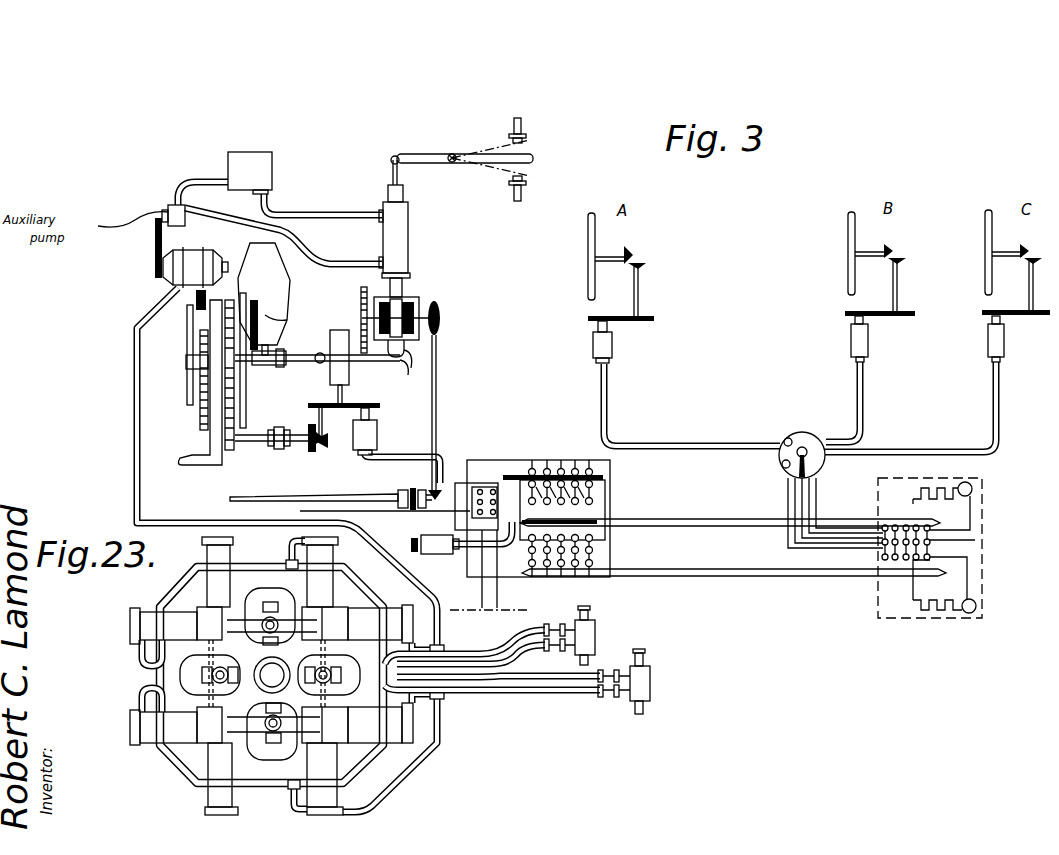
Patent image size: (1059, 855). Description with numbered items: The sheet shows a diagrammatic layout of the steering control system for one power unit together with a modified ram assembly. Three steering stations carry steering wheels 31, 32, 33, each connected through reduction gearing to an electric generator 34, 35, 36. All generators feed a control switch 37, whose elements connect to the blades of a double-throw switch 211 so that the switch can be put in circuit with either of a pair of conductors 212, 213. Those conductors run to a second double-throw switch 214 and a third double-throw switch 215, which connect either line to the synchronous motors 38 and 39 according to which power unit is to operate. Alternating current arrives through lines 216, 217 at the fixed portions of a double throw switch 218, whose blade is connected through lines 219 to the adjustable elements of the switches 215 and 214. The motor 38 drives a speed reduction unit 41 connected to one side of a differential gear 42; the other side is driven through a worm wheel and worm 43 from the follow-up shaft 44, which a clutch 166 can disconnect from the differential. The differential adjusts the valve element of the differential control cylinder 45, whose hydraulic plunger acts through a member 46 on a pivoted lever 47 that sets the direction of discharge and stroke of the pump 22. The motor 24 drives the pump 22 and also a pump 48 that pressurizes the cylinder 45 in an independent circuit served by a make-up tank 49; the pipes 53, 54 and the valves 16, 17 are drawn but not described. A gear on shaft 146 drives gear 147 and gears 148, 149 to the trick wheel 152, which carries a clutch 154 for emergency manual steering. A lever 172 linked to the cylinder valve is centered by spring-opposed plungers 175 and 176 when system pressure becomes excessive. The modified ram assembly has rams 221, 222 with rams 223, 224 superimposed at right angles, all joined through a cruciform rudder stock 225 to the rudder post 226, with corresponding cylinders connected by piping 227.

In FIG. 23, the valve 16 is at (595, 636).
In FIG. 23, the valve 17 is at (650, 682).
In FIG. 3, the pump 22 is at (286, 288).
In FIG. 3, the motor 24 is at (196, 250).
In FIG. 3, the steering wheel 31 is at (588, 228).
In FIG. 3, the steering wheel 32 is at (848, 222).
In FIG. 3, the steering wheel 33 is at (985, 222).
In FIG. 3, the electric generator 34 is at (593, 341).
In FIG. 3, the electric generator 35 is at (851, 342).
In FIG. 3, the electric generator 36 is at (988, 338).
In FIG. 3, the control switch 37 is at (800, 432).
In FIG. 3, the synchronous motor 38 is at (377, 430).
In FIG. 3, the synchronous motor 39 is at (436, 555).
In FIG. 3, the speed reduction unit 41 is at (349, 381).
In FIG. 3, the differential gear 42 is at (416, 297).
In FIG. 3, the worm wheel and worm 43 is at (441, 313).
In FIG. 3, the follow-up shaft 44 is at (305, 494).
In FIG. 3, the differential control cylinder 45 is at (408, 212).
In FIG. 3, the member 46 is at (411, 368).
In FIG. 3, the pivoted lever 47 is at (303, 353).
In FIG. 3, the pump 48 is at (170, 205).
In FIG. 3, the make-up tank 49 is at (258, 152).
In FIG. 3, the pipe 53 is at (308, 214).
In FIG. 3, the pipe 54 is at (334, 262).
In FIG. 3, the shaft 146 is at (258, 435).
In FIG. 3, the gear 147 is at (226, 442).
In FIG. 3, the gear 148 is at (210, 412).
In FIG. 3, the gear 149 is at (204, 380).
In FIG. 3, the trick wheel 152 is at (189, 313).
In FIG. 3, the clutch 154 is at (190, 362).
In FIG. 3, the clutch 166 is at (410, 488).
In FIG. 3, the lever 172 is at (474, 154).
In FIG. 3, the plunger 175 is at (520, 118).
In FIG. 3, the plunger 176 is at (523, 192).
In FIG. 3, the double-throw switch 211 is at (884, 524).
In FIG. 3, the conductor 212 is at (710, 513).
In FIG. 3, the conductor 213 is at (728, 566).
In FIG. 3, the double-throw switch 214 is at (598, 550).
In FIG. 3, the double-throw switch 215 is at (605, 490).
In FIG. 3, the line 216 is at (190, 522).
In FIG. 3, the line 217 is at (499, 597).
In FIG. 3, the double throw switch 218 is at (480, 487).
In FIG. 3, the lines 219 is at (520, 475).
In FIG. 23, the ram 221 is at (246, 618).
In FIG. 23, the ram 222 is at (247, 730).
In FIG. 23, the ram 223 is at (212, 647).
In FIG. 23, the ram 224 is at (334, 648).
In FIG. 23, the cruciform rudder stock 225 is at (185, 674).
In FIG. 23, the rudder post 226 is at (262, 671).
In FIG. 23, the piping 227 is at (510, 660).